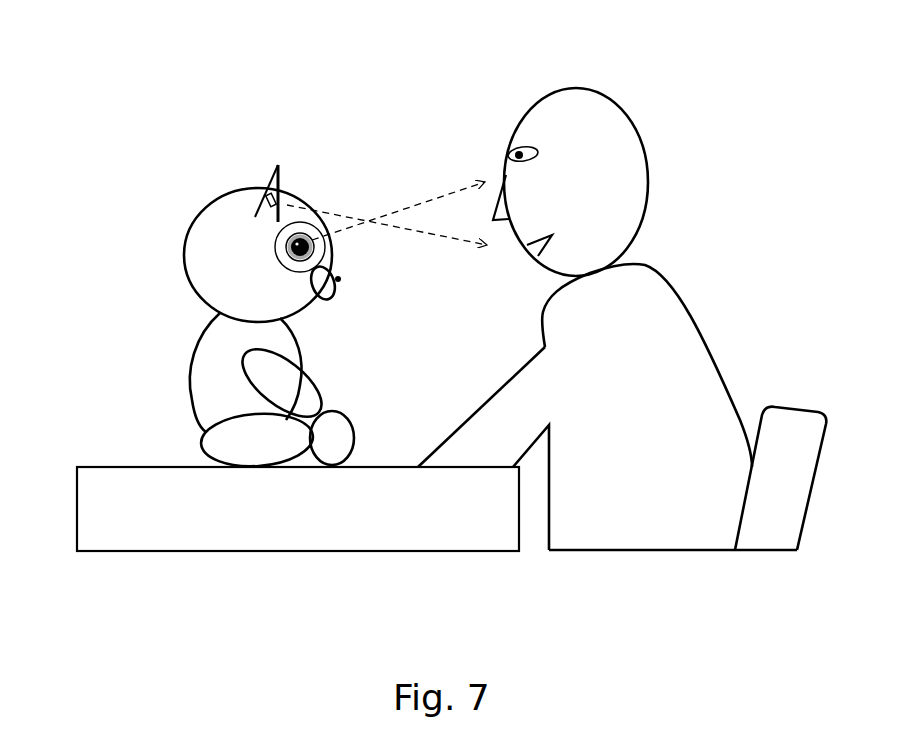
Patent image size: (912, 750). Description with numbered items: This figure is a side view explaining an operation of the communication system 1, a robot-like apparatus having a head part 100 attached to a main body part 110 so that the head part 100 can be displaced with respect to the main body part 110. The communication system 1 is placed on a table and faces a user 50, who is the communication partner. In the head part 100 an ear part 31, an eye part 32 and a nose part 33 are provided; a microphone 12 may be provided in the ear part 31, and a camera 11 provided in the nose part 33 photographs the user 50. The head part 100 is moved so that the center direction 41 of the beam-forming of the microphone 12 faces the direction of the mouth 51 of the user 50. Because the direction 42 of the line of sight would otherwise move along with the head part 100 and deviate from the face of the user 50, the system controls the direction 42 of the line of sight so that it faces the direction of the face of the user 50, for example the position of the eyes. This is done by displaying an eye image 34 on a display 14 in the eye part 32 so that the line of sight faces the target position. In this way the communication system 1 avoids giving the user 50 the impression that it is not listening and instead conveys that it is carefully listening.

The communication system 1 is at (168, 103).
The head part 100 is at (182, 195).
The main body part 110 is at (175, 357).
The microphone 12 is at (258, 196).
The ear part 31 is at (268, 188).
The eye part 32 is at (194, 247).
The display 14 is at (275, 248).
The eye image 34 is at (297, 255).
The nose part 33 is at (361, 317).
The camera 11 is at (342, 280).
The center direction of the beam-forming 41 is at (408, 232).
The direction of the line of sight 42 is at (420, 197).
The user 50 is at (678, 95).
The mouth 51 is at (528, 245).